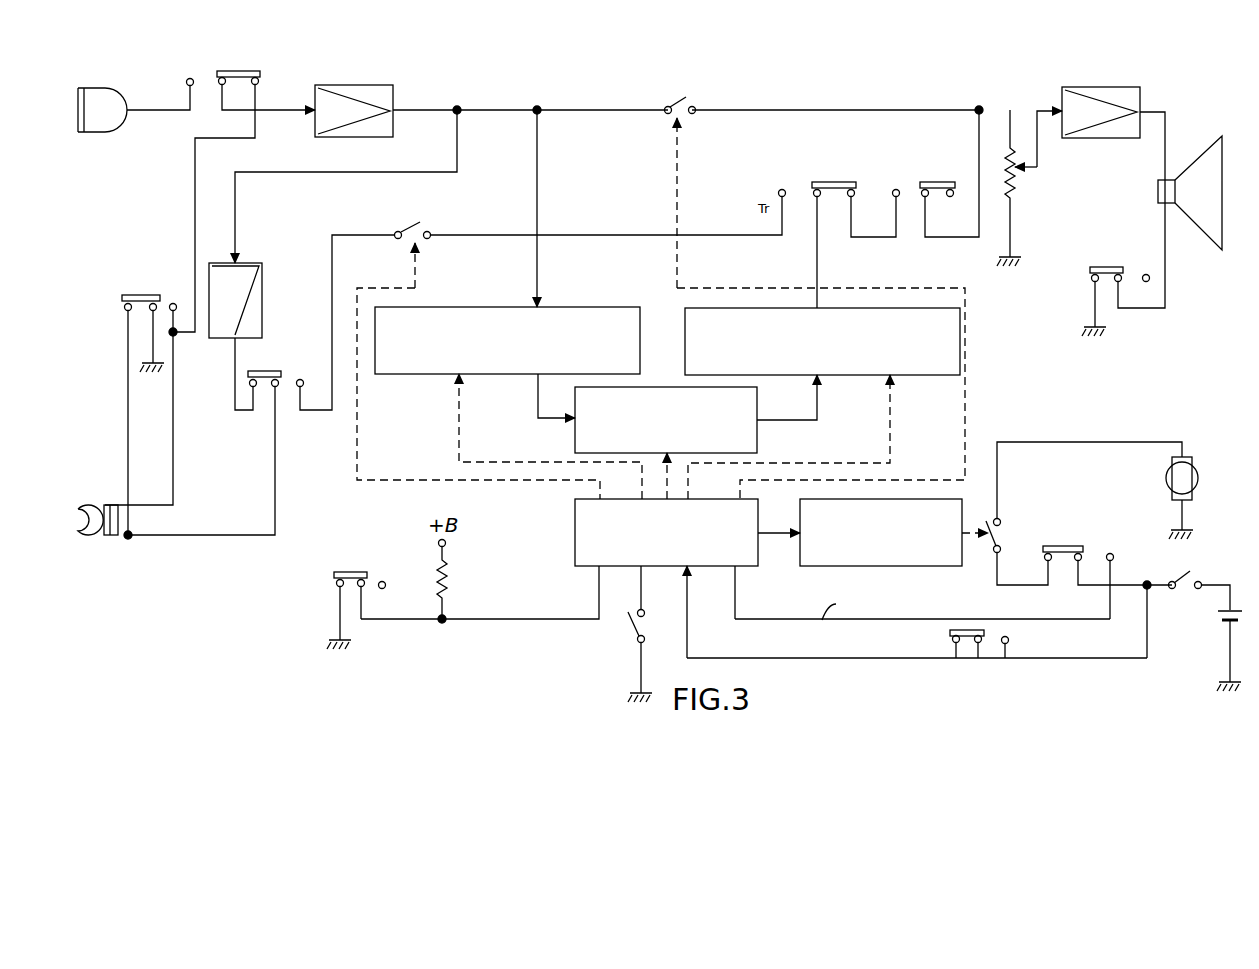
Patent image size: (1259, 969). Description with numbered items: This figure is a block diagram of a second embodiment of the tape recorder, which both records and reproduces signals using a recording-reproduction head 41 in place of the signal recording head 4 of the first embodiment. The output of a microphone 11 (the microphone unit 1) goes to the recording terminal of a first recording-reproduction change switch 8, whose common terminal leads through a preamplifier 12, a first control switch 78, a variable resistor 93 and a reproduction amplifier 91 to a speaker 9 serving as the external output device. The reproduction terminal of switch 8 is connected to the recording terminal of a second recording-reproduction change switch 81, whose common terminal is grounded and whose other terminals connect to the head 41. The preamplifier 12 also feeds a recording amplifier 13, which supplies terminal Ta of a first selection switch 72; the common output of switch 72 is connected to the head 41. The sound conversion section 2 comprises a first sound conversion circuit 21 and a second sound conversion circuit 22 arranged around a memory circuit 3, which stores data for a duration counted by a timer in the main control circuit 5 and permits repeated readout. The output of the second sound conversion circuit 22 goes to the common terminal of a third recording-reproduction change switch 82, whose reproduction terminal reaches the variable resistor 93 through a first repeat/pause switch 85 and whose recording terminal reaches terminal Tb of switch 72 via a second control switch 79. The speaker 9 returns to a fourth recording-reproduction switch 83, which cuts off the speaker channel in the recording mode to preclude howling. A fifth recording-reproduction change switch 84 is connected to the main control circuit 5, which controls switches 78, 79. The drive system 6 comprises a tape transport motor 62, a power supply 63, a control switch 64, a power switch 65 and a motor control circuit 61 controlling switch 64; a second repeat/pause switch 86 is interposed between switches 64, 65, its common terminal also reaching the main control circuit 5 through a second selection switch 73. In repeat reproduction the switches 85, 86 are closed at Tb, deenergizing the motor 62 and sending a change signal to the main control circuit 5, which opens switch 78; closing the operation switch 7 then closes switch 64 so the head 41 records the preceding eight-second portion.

The microphone unit 1 is at (102, 78).
The microphone 11 is at (125, 94).
The first recording-reproduction change switch 8 is at (238, 72).
The preamplifier 12 is at (372, 85).
The recording amplifier 13 is at (262, 300).
The sound conversion section 2 is at (542, 298).
The first sound conversion circuit 21 is at (552, 307).
The second sound conversion circuit 22 is at (868, 308).
The memory circuit 3 is at (643, 387).
The signal recording head 4 is at (98, 462).
The recording-reproduction head 41 is at (106, 505).
The main control circuit 5 is at (740, 499).
The signal recording medium drive system 6 is at (1070, 438).
The motor control circuit 61 is at (900, 566).
The tape transport motor 62 is at (1196, 468).
The power supply 63 is at (1232, 600).
The control switch 64 is at (993, 516).
The power supply switch 65 is at (1186, 554).
The operation switch 7 is at (624, 644).
The first selection switch 72 is at (268, 366).
The second selection switch 73 is at (946, 634).
The first control switch 78 is at (680, 92).
The second control switch 79 is at (402, 222).
The second recording-reproduction change switch 81 is at (146, 296).
The third recording-reproduction change switch 82 is at (836, 182).
The fourth recording-reproduction switch 83 is at (1110, 266).
The fifth recording-reproduction change switch 84 is at (352, 572).
The first repeat/pause switch 85 is at (928, 182).
The second repeat/pause switch 86 is at (1060, 546).
The speaker 9 is at (1213, 148).
The reproduction amplifier 91 is at (1124, 88).
The variable resistor 93 is at (1014, 186).